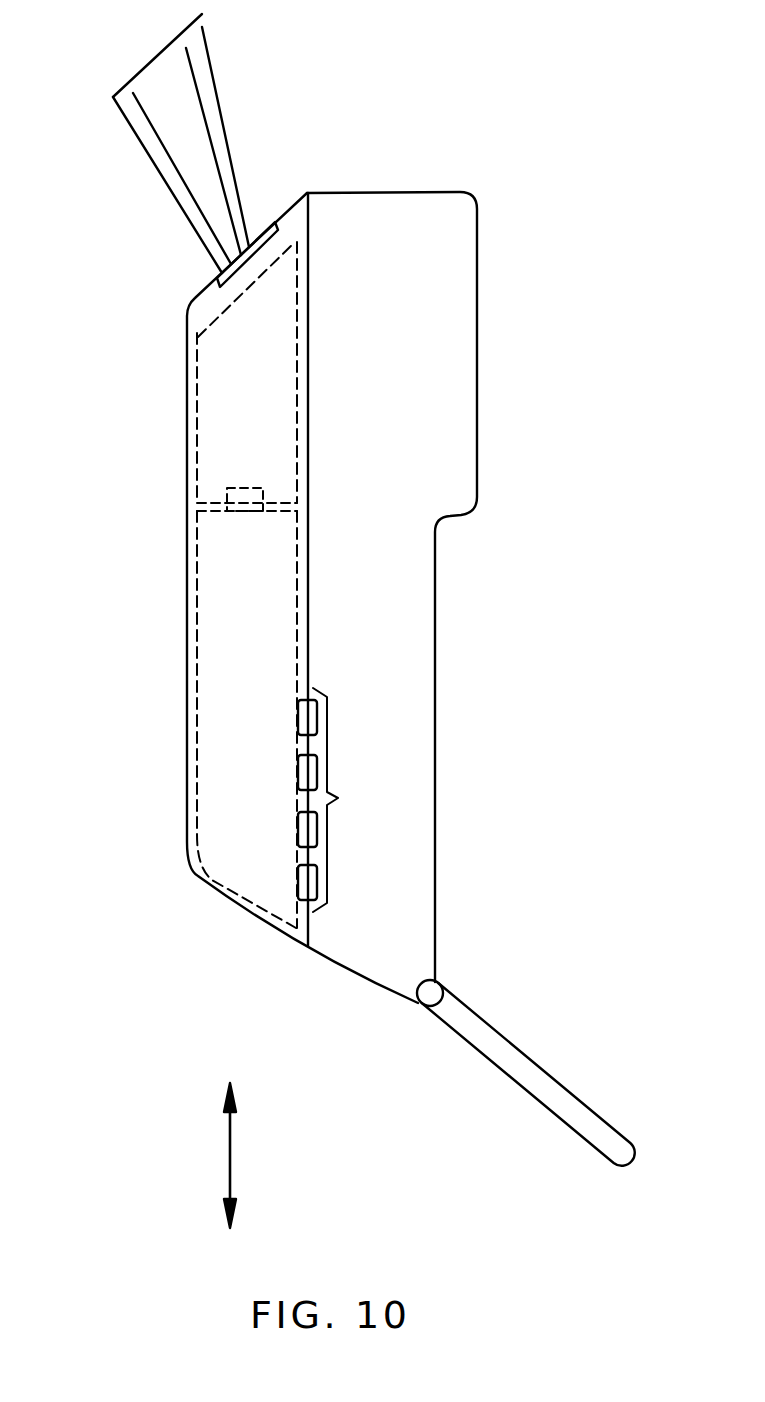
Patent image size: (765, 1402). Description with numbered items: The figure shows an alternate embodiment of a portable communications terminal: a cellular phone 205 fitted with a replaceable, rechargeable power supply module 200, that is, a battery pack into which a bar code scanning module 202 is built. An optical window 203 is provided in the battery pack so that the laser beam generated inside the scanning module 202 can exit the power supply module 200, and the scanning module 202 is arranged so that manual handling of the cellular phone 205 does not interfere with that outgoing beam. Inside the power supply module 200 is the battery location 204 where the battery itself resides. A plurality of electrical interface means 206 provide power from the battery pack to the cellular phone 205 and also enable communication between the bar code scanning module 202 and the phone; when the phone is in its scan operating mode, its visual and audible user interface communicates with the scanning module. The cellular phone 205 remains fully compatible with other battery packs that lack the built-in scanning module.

The power supply module 200 is at (188, 498).
The bar code scanning module 202 is at (223, 378).
The optical window 203 is at (220, 270).
The battery location 204 is at (237, 670).
The cellular phone 205 is at (450, 375).
The electrical interface means 206 is at (338, 798).